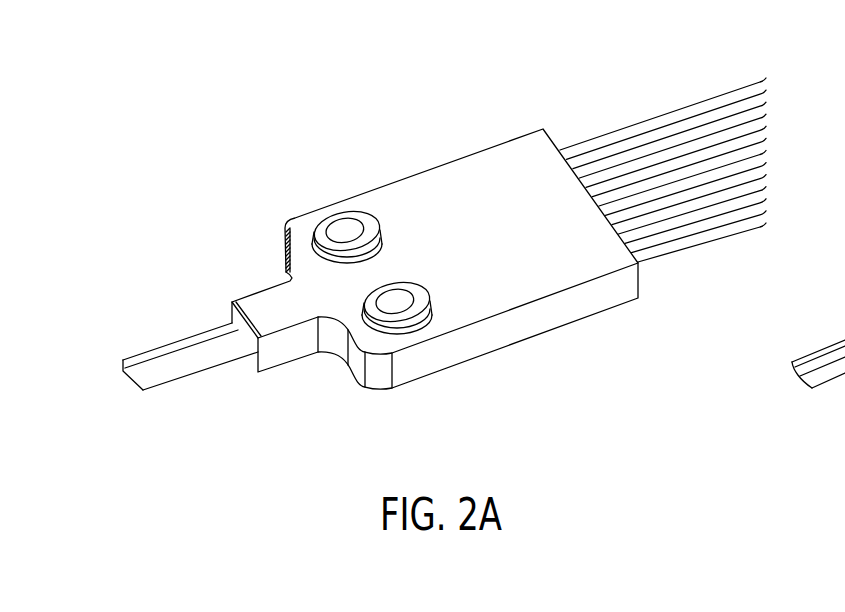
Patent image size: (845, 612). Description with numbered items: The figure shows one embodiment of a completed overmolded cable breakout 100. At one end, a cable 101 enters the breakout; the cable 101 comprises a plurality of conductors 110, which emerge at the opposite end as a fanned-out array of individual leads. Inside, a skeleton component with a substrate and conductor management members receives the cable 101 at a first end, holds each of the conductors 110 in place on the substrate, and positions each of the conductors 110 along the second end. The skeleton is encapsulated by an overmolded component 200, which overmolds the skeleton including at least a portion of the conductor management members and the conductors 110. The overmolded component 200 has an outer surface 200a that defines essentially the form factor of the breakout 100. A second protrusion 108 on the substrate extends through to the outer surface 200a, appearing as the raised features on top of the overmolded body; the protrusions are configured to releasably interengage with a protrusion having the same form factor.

The cable breakout 100 is at (380, 106).
The cable 101 is at (172, 343).
The second protrusion 108 is at (325, 212).
The conductors 110 is at (773, 78).
The overmolded component 200 is at (543, 280).
The outer surface 200a is at (505, 142).